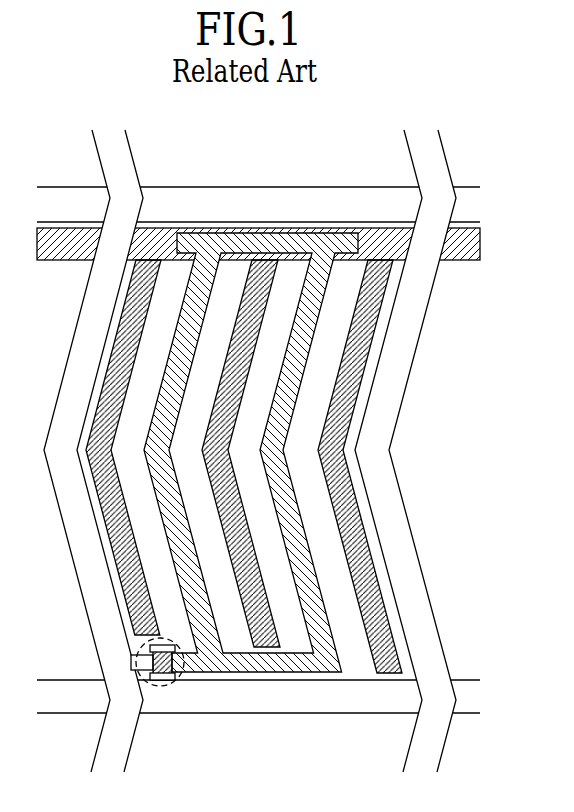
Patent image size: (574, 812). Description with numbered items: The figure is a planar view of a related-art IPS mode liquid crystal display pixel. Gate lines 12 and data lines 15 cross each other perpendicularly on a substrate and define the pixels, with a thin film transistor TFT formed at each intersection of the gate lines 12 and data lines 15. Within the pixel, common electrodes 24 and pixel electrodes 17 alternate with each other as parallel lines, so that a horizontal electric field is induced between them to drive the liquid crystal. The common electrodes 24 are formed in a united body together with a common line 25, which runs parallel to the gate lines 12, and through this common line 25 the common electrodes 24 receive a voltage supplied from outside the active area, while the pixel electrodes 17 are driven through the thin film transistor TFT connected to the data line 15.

The common line 25 is at (480, 242).
The common electrodes 24 is at (260, 310).
The pixel electrodes 17 is at (293, 377).
The data lines 15 is at (382, 413).
The gate lines 12 is at (245, 703).
The thin film transistor TFT is at (168, 686).